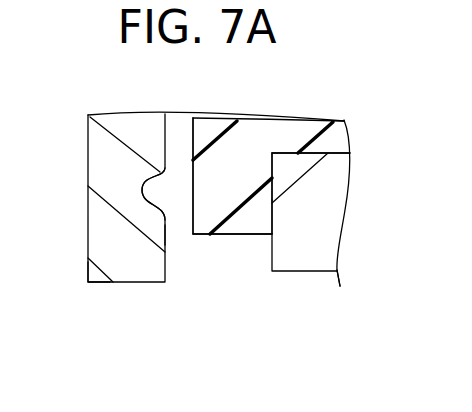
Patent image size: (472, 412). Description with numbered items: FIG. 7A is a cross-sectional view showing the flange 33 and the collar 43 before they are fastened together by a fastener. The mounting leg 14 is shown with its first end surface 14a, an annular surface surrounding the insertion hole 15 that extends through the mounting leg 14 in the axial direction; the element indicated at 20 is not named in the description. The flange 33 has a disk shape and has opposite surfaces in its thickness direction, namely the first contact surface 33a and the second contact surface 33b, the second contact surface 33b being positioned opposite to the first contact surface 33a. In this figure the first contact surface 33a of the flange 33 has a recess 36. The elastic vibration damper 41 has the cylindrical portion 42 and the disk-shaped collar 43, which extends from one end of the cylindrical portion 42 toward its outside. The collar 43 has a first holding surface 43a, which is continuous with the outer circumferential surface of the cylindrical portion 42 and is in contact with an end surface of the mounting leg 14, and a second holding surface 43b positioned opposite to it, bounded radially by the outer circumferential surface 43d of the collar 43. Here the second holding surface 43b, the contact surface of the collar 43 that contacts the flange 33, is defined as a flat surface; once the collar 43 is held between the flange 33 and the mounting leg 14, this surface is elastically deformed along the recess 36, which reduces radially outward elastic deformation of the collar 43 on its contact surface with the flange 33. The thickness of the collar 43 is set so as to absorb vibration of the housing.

The mounting leg 14 is at (344, 223).
The first end surface 14a is at (273, 178).
The insertion hole 15 is at (327, 153).
The rotor 20 is at (355, 284).
The flange 33 is at (88, 222).
The first contact surface 33a is at (165, 231).
The second contact surface 33b is at (88, 266).
The recess 36 is at (142, 190).
The elastic vibration damper 41 is at (350, 147).
The cylindrical portion 42 is at (308, 120).
The collar 43 is at (253, 183).
The first holding surface 43a is at (272, 226).
The second holding surface 43b is at (192, 217).
The outer circumferential surface 43d is at (230, 234).